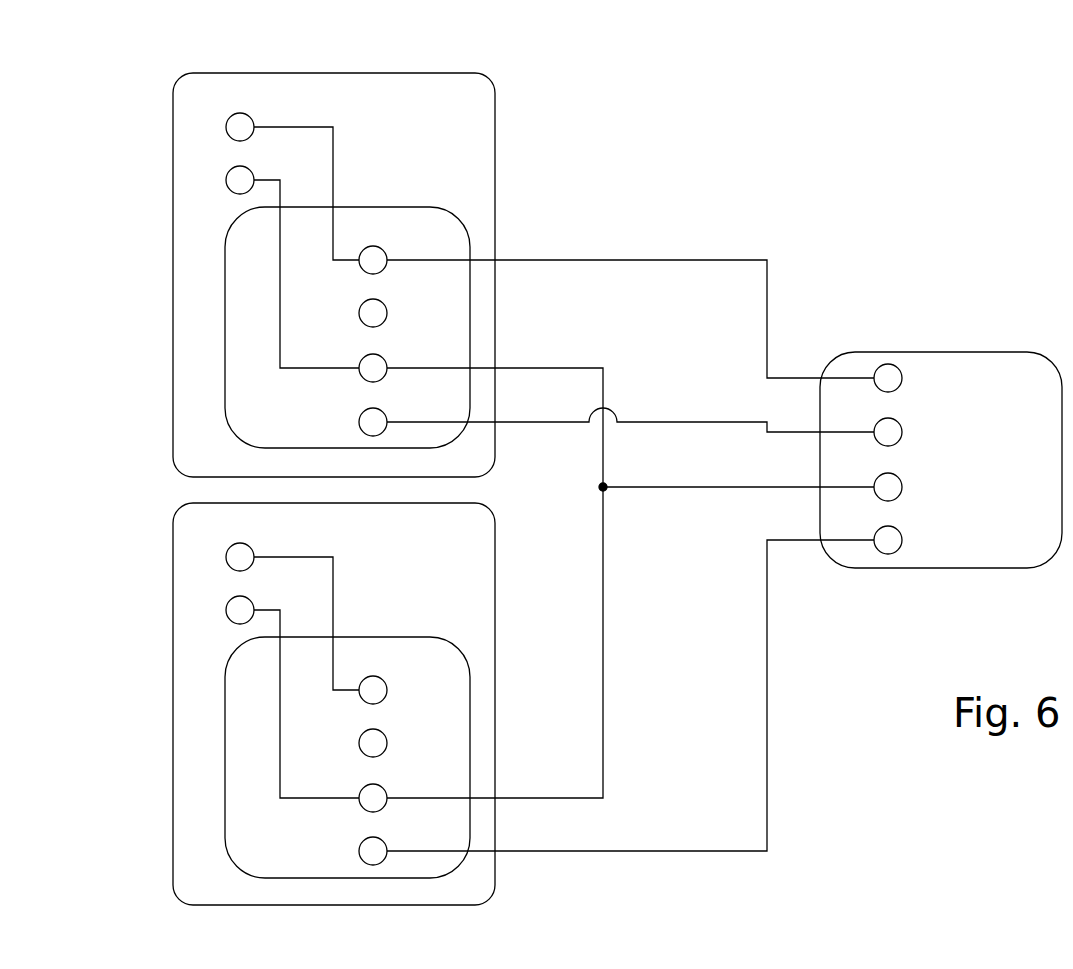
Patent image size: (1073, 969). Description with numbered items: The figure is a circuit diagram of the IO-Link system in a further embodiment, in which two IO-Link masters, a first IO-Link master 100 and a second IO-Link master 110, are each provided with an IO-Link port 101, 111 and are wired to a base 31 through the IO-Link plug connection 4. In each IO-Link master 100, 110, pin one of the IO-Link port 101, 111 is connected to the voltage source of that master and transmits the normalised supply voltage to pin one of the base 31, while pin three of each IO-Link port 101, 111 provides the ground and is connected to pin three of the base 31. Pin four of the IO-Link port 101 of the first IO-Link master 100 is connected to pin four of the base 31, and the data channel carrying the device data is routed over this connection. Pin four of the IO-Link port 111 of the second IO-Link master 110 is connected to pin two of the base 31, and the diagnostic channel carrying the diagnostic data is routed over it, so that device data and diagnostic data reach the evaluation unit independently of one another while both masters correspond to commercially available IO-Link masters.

The second IO-Link master 110 is at (495, 128).
The IO-Link port 111 is at (225, 296).
The first IO-Link master 100 is at (173, 557).
The IO-Link port 101 is at (225, 726).
The base 31 is at (1015, 352).
The IO-Link plug connection 4 is at (743, 208).